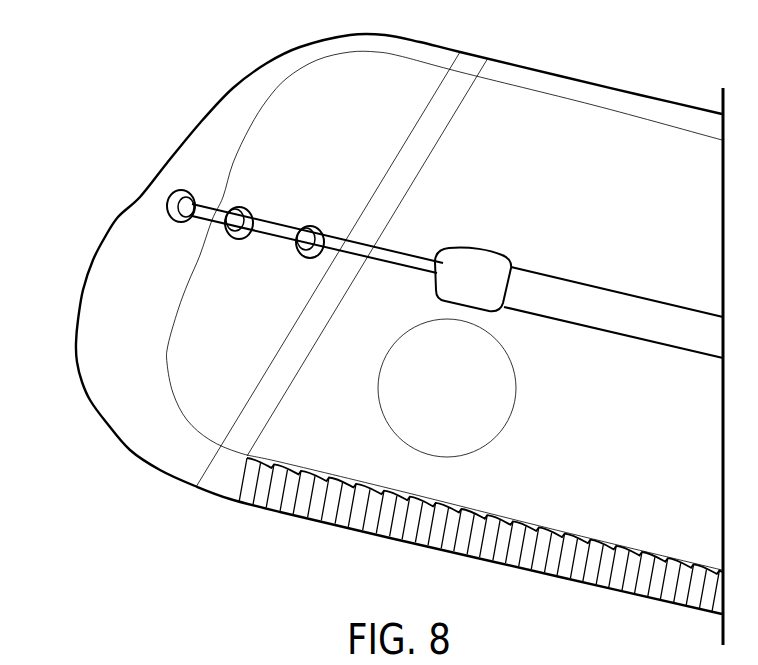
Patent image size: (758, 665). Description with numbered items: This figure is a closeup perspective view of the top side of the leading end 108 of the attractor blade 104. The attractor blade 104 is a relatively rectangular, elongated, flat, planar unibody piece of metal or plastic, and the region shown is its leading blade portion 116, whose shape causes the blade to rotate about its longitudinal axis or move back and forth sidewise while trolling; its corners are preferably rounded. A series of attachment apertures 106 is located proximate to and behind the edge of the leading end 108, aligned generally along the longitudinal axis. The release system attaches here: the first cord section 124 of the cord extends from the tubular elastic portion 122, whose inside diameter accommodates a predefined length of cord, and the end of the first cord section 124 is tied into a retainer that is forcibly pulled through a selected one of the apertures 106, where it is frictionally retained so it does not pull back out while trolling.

The attractor blade 104 is at (619, 71).
The attachment apertures 106 is at (192, 200).
The leading end 108 is at (117, 219).
The leading blade portion 116 is at (183, 423).
The elastic portion 122 is at (553, 283).
The first cord section 124 is at (418, 270).